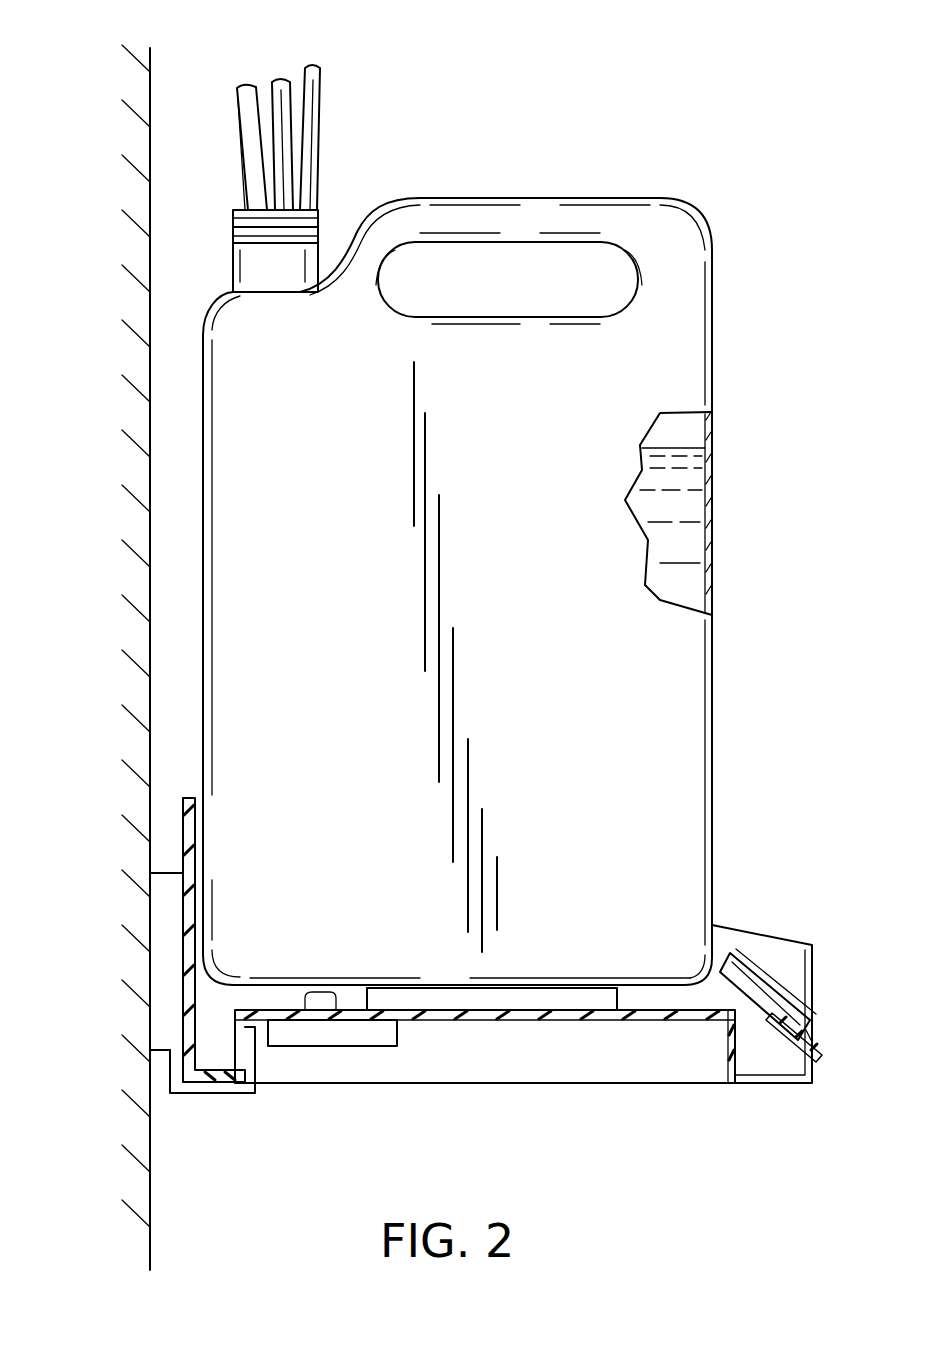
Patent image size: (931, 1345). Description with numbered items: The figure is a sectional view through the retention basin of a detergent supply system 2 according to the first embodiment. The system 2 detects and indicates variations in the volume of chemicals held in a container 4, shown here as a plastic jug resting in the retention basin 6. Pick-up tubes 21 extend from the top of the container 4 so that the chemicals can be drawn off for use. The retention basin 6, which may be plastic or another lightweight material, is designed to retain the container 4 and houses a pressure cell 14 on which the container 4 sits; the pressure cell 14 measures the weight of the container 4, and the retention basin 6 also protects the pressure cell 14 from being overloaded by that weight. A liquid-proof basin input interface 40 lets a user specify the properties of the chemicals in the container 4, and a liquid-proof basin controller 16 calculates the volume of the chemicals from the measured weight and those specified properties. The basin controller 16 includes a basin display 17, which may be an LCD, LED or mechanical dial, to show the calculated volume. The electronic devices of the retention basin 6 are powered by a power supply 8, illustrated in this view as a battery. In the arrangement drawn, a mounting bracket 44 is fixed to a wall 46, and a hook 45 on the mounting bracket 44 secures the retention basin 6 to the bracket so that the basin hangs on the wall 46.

The detergent supply system 2 is at (703, 88).
The container 4 is at (680, 705).
The retention basin 6 is at (774, 1083).
The power supply 8 is at (340, 1026).
The pressure cell 14 is at (578, 1002).
The basin controller 16 is at (770, 1020).
The basin display 17 is at (770, 1020).
The pick-up tubes 21 is at (320, 131).
The basin input interface 40 is at (820, 1061).
The mounting bracket 44 is at (165, 985).
The hook 45 is at (224, 1084).
The wall 46 is at (150, 714).